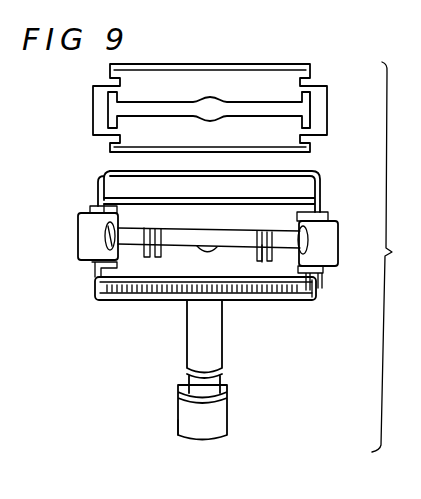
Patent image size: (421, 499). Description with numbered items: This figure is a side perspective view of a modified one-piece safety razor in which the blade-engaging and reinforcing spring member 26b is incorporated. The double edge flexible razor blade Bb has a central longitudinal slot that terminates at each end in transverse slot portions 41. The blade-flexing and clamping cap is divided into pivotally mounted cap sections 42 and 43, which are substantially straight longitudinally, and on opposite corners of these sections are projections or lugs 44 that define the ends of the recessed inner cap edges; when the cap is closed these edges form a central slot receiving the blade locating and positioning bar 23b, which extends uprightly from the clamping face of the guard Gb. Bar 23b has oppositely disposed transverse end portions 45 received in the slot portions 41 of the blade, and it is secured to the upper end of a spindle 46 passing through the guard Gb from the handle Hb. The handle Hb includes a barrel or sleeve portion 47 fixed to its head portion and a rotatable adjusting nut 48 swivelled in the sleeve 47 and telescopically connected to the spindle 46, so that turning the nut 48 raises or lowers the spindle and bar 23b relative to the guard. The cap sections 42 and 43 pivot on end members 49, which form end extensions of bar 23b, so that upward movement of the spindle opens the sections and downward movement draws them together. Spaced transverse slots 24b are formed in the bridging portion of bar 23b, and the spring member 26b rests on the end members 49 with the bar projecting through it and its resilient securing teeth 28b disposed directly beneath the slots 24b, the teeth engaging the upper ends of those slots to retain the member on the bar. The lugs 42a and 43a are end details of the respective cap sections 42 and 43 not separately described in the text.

The double edge flexible razor blade Bb is at (95, 96).
The transverse slot portions 41 is at (306, 110).
The projections or lugs 44 is at (103, 168).
The cap section 42 is at (97, 188).
The cap end lug 42a is at (90, 212).
The blade-engaging and reinforcing spring member 26b is at (78, 237).
The blade locating and positioning bar 23b is at (137, 228).
The spindle 46 is at (200, 253).
The transverse end portions 45 is at (305, 233).
The transverse slots 24b is at (264, 262).
The end members 49 is at (323, 268).
The cap section 43 is at (267, 297).
The guard end lug 43a is at (96, 289).
The resilient securing teeth 28b is at (264, 262).
The guard Gb is at (315, 285).
The barrel or sleeve portion 47 is at (185, 357).
The adjusting nut 48 is at (176, 420).
The handle Hb is at (227, 434).